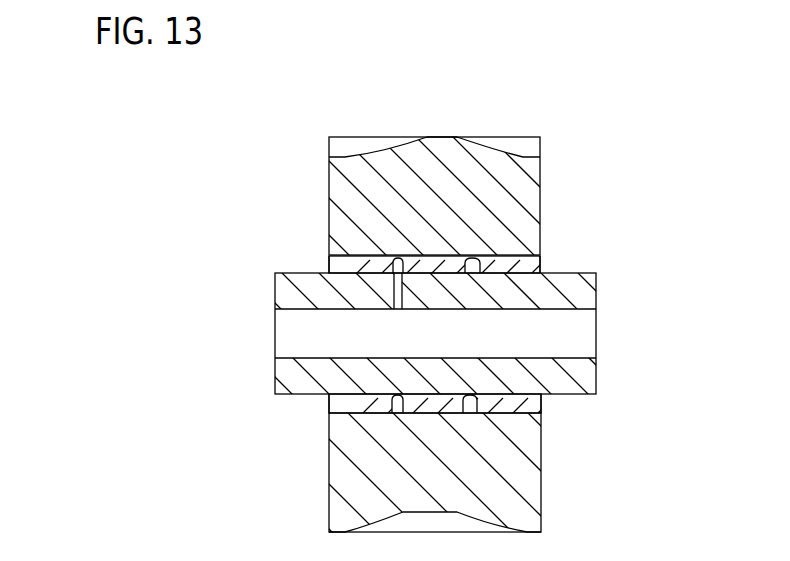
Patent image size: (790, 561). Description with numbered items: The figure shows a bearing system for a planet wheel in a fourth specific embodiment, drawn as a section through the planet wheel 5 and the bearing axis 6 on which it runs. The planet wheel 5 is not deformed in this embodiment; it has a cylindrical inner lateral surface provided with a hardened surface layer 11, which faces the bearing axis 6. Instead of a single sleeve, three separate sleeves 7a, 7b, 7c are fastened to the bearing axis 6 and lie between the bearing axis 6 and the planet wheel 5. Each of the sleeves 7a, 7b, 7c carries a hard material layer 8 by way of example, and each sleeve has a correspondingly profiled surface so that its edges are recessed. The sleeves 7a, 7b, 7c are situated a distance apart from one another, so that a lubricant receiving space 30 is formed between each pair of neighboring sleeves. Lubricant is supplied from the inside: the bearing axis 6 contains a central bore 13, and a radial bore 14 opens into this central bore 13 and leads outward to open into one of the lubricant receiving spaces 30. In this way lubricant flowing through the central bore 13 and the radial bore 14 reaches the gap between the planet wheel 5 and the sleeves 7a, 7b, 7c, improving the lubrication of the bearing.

The planet wheel 5 is at (490, 172).
The bearing axis 6 is at (573, 292).
The sleeve 7a is at (538, 253).
The sleeve 7b is at (440, 262).
The sleeve 7c is at (345, 260).
The hard material layer 8 is at (360, 260).
The hardened surface layer 11 is at (392, 247).
The central bore 13 is at (283, 333).
The radial bore 14 is at (397, 290).
The lubricant receiving space 30 is at (392, 258).